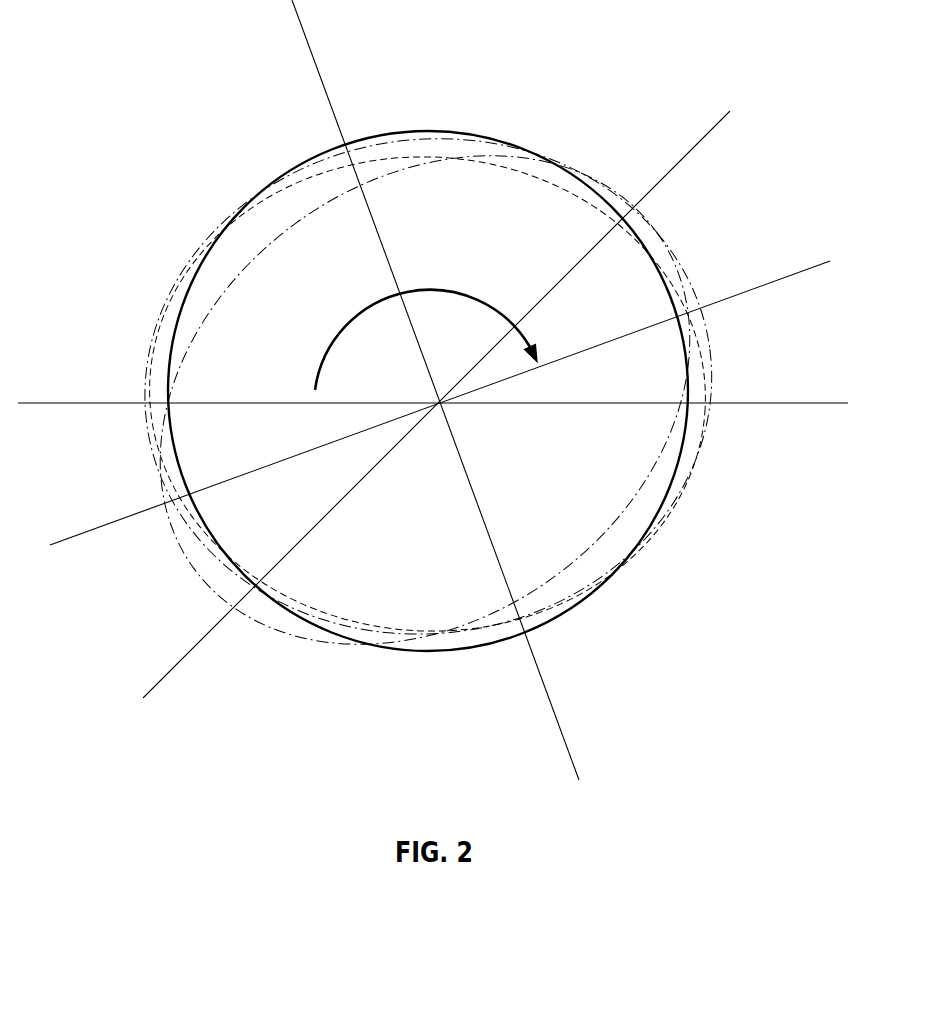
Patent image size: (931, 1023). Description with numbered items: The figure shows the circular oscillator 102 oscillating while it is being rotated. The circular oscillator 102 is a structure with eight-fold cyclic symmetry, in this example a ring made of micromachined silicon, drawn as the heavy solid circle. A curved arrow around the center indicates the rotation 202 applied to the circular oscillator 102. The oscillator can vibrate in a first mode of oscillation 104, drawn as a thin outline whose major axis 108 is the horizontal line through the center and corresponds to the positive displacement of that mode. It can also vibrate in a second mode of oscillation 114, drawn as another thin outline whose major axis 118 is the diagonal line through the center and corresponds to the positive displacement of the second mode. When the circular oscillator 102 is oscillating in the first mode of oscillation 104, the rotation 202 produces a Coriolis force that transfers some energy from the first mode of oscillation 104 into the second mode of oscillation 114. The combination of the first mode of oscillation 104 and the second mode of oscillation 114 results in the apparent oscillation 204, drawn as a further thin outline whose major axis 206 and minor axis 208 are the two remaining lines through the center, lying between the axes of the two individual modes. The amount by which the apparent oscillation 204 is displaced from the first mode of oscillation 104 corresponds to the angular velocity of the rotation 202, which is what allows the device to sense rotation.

The circular oscillator 102 is at (241, 206).
The first mode of oscillation 104 is at (675, 497).
The major axis 108 is at (92, 400).
The second mode of oscillation 114 is at (507, 135).
The major axis 118 is at (176, 665).
The rotation 202 is at (442, 269).
The apparent oscillation 204 is at (692, 430).
The major axis 206 is at (112, 521).
The minor axis 208 is at (556, 719).